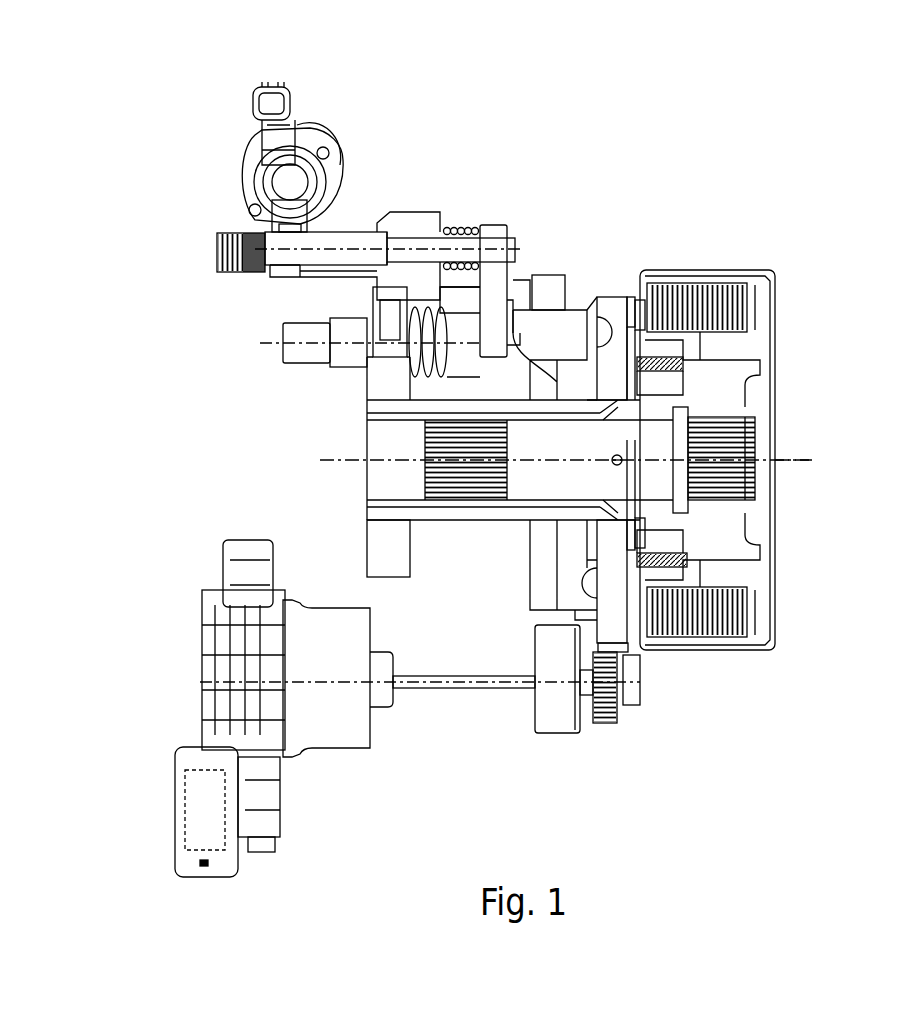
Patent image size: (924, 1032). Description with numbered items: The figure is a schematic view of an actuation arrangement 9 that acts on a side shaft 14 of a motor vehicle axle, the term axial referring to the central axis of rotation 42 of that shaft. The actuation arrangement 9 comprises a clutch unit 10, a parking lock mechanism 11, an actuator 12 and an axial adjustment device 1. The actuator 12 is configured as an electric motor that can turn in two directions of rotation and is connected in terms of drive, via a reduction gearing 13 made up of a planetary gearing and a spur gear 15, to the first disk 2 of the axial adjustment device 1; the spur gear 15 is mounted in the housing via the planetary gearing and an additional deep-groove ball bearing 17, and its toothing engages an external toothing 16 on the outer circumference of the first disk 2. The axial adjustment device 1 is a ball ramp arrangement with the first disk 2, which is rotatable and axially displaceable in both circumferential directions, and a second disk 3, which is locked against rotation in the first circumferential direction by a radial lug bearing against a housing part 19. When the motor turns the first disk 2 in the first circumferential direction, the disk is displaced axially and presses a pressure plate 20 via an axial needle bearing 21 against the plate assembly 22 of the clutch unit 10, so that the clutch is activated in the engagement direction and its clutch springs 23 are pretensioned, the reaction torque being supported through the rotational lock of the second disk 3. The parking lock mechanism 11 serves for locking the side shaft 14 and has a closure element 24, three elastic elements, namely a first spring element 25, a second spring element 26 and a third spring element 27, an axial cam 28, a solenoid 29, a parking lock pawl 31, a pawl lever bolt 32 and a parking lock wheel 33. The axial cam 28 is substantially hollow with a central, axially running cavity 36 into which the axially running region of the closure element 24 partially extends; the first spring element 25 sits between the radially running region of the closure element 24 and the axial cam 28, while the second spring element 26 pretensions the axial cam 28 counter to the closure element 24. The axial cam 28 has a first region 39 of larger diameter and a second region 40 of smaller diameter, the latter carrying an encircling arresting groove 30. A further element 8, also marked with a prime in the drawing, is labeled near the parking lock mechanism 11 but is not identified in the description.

The axial adjustment device 1 is at (575, 300).
The first disk 2 is at (616, 300).
The second disk 3 is at (592, 287).
The sealing element 8 is at (522, 325).
The actuation arrangement 9 is at (152, 160).
The clutch unit 10 is at (783, 282).
The parking lock mechanism 11 is at (440, 378).
The actuator 12 is at (320, 727).
The reduction gearing 13 is at (558, 715).
The side shaft 14 is at (638, 480).
The spur gear 15 is at (605, 712).
The external toothing 16 is at (612, 647).
The deep-groove ball bearing 17 is at (630, 690).
The housing part 19 is at (546, 290).
The pressure plate 20 is at (650, 322).
The axial needle bearing 21 is at (643, 310).
The plate assembly 22 is at (724, 306).
The clutch springs 23 is at (684, 366).
The closure element 24 is at (490, 275).
The first spring element 25 is at (465, 230).
The second spring element 26 is at (228, 255).
The third spring element 27 is at (422, 356).
The axial cam 28 is at (378, 232).
The solenoid 29 is at (238, 132).
The arresting groove 30 is at (283, 271).
The parking lock pawl 31 is at (395, 325).
The pawl lever bolt 32 is at (310, 348).
The parking lock wheel 33 is at (385, 548).
The cavity 36 is at (340, 242).
The first region 39 is at (411, 213).
The second region 40 is at (340, 277).
The central axis of rotation 42 is at (803, 460).